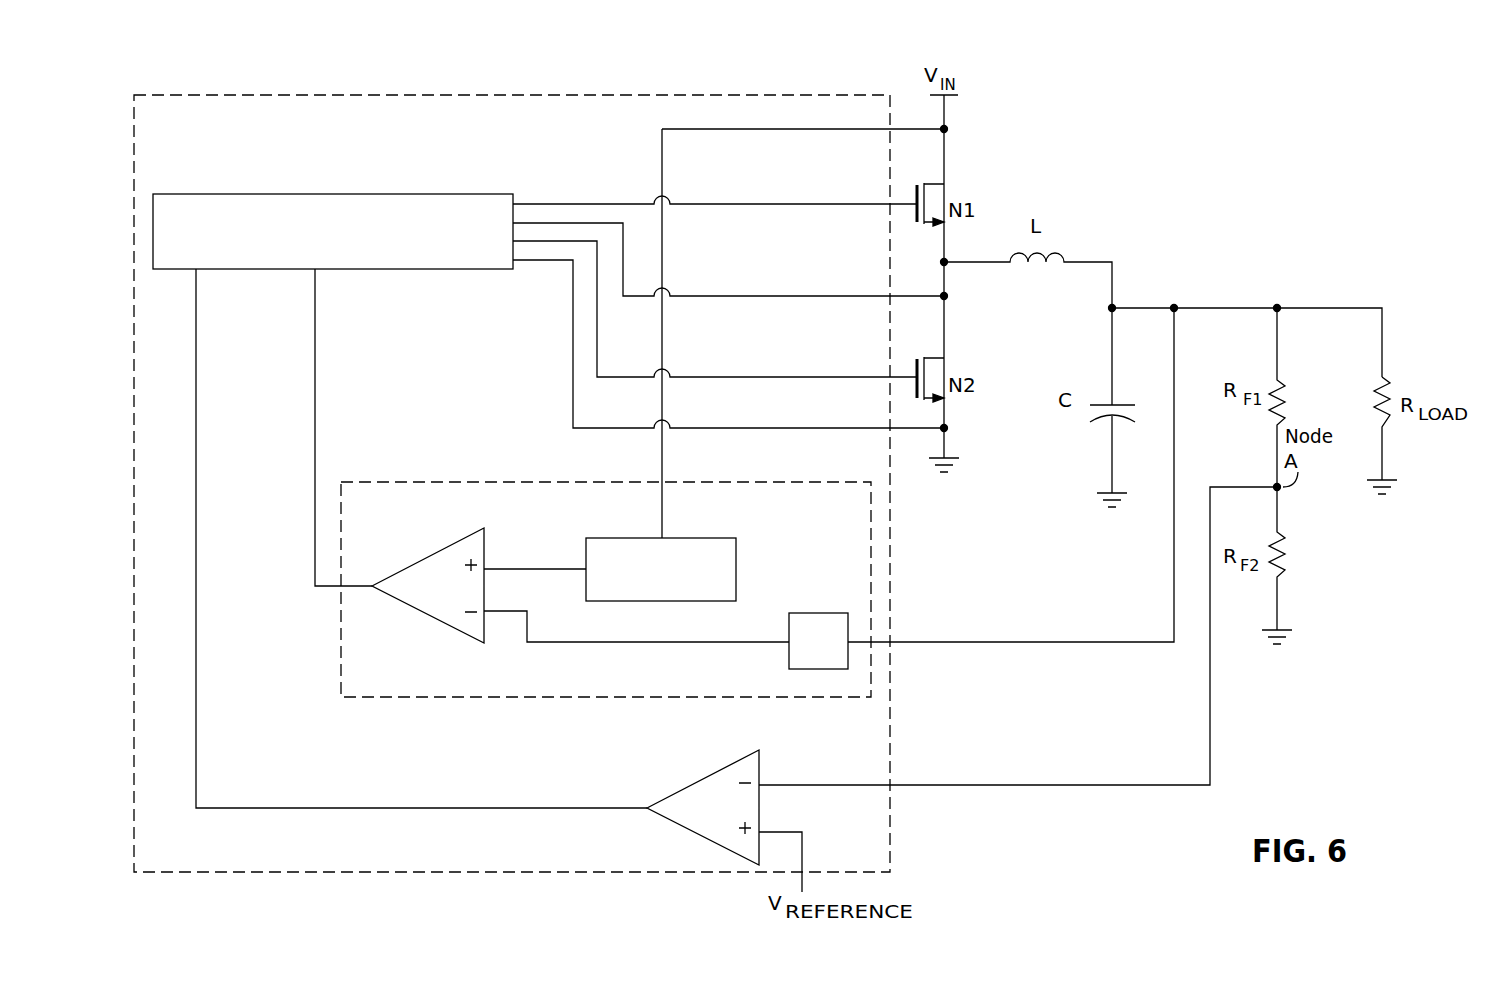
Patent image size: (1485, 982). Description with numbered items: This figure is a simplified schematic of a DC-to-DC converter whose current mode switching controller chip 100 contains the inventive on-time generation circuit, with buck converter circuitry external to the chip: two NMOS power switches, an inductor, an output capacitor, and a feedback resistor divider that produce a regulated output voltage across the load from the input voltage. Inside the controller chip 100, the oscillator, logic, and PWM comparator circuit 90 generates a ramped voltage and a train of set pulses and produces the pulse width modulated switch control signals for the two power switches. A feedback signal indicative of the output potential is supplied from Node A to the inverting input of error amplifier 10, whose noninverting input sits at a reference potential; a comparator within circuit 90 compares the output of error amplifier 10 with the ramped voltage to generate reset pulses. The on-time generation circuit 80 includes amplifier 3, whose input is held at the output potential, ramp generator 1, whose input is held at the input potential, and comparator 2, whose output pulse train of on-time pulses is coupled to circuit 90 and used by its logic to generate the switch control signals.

The current mode switching controller chip 100 is at (406, 95).
The oscillator, logic, and PWM comparator circuit 90 is at (335, 194).
The on-time generation circuit 80 is at (463, 482).
The comparator 2 is at (428, 555).
The ramp generator 1 is at (619, 538).
The amplifier 3 is at (828, 613).
The error amplifier 10 is at (703, 775).